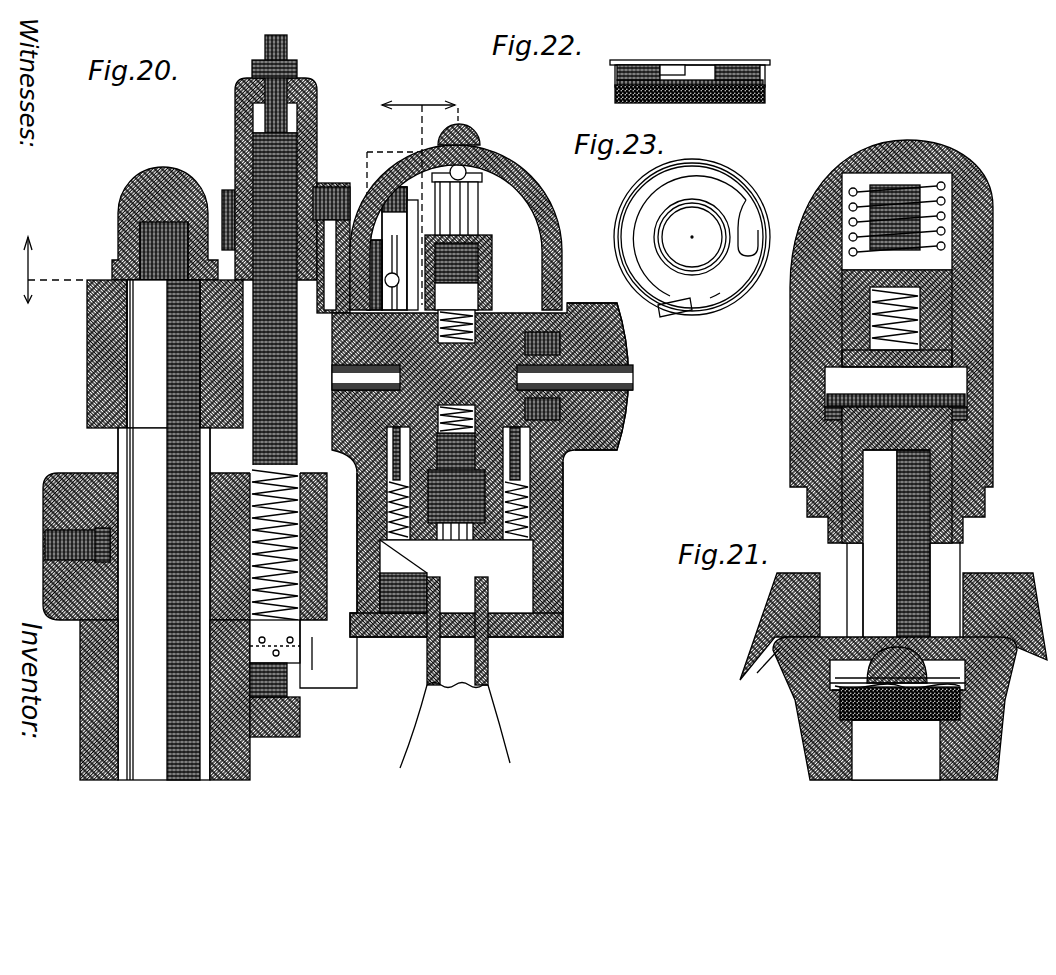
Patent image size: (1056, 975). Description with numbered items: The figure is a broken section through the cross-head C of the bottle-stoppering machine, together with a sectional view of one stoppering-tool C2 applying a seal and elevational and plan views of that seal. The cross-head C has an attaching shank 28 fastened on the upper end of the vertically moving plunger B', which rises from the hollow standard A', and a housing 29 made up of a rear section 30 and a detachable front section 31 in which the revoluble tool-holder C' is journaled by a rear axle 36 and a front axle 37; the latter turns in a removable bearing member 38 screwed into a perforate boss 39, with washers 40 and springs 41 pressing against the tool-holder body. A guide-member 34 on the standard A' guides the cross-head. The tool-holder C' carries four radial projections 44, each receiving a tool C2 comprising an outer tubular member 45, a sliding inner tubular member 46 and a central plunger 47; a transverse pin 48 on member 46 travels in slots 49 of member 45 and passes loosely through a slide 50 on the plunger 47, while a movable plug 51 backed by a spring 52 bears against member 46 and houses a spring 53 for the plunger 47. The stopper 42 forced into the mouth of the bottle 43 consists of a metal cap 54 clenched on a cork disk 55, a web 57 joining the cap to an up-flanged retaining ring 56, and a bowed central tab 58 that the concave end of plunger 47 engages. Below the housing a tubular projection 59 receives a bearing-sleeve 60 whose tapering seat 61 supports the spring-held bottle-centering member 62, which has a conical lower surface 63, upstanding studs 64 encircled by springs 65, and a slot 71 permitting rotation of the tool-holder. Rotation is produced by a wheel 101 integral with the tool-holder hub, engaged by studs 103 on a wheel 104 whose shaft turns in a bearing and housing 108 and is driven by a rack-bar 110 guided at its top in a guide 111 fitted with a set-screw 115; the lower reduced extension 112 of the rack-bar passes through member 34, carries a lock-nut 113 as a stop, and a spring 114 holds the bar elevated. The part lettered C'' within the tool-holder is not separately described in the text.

In FIG. 20, the attaching shank 28 is at (100, 379).
In FIG. 20, the housing 29 is at (452, 194).
In FIG. 20, the rear section 30 is at (416, 153).
In FIG. 20, the front section 31 is at (553, 183).
In FIG. 20, the guide-member 34 is at (303, 658).
In FIG. 20, the rear axle 36 is at (350, 375).
In FIG. 20, the front axle 37 is at (634, 377).
In FIG. 20, the removable bearing member 38 is at (612, 354).
In FIG. 20, the perforate boss 39 is at (600, 297).
In FIG. 20, the washers 40 is at (523, 311).
In FIG. 20, the springs 41 is at (567, 297).
In FIG. 22, the stopper 42 is at (711, 81).
In FIG. 23, the stopper 42 is at (678, 237).
In FIG. 21, the stopper 42 is at (963, 705).
In FIG. 20, the bottle 43 is at (455, 726).
In FIG. 21, the bottle 43 is at (902, 708).
In FIG. 20, the radial projections 44 is at (492, 252).
In FIG. 21, the radial projections 44 is at (790, 462).
In FIG. 21, the outer tubular member 45 is at (970, 503).
In FIG. 21, the inner tubular member 46 is at (973, 440).
In FIG. 21, the central plunger 47 is at (896, 550).
In FIG. 21, the transverse pin 48 is at (958, 388).
In FIG. 21, the slots 49 is at (830, 374).
In FIG. 21, the slide 50 is at (843, 361).
In FIG. 21, the movable plug 51 is at (953, 288).
In FIG. 21, the spring 52 is at (923, 231).
In FIG. 21, the spring 53 is at (923, 308).
In FIG. 22, the metal cap 54 is at (720, 86).
In FIG. 23, the metal cap 54 is at (705, 308).
In FIG. 21, the metal cap 54 is at (846, 697).
In FIG. 22, the cork disk 55 is at (741, 103).
In FIG. 21, the cork disk 55 is at (913, 708).
In FIG. 22, the retaining ring 56 is at (766, 67).
In FIG. 23, the retaining ring 56 is at (740, 178).
In FIG. 21, the retaining ring 56 is at (965, 688).
In FIG. 22, the web 57 is at (686, 64).
In FIG. 23, the central tab 58 is at (732, 218).
In FIG. 21, the central tab 58 is at (885, 684).
In FIG. 20, the tubular projection 59 is at (565, 597).
In FIG. 20, the bearing-sleeve 60 is at (562, 618).
In FIG. 20, the tapering seat 61 is at (408, 638).
In FIG. 20, the bottle-centering member 62 is at (533, 553).
In FIG. 21, the bottle-centering member 62 is at (993, 580).
In FIG. 20, the conical lower surface 63 is at (500, 580).
In FIG. 21, the conical lower surface 63 is at (757, 673).
In FIG. 20, the studs 64 is at (399, 465).
In FIG. 20, the springs 65 is at (393, 493).
In FIG. 20, the slot 71 is at (529, 530).
In FIG. 20, the wheel 101 is at (399, 282).
In FIG. 20, the studs 103 is at (380, 172).
In FIG. 20, the star-wheel 104 is at (390, 203).
In FIG. 20, the bearing and housing 108 is at (229, 190).
In FIG. 20, the rack-bar 110 is at (275, 301).
In FIG. 20, the guide 111 is at (238, 119).
In FIG. 20, the reduced extension 112 is at (258, 474).
In FIG. 20, the lock-nut 113 is at (252, 632).
In FIG. 20, the spring 114 is at (252, 539).
In FIG. 20, the set-screw 115 is at (289, 52).
In FIG. 20, the hollow standard A' is at (180, 535).
In FIG. 20, the plunger B' is at (164, 530).
In FIG. 20, the cross-head C is at (332, 432).
In FIG. 21, the cross-head C is at (922, 221).
In FIG. 20, the tool-holder C' is at (505, 273).
In FIG. 20, the casing part C'' is at (443, 378).
In FIG. 20, the seal-applying tools C2 is at (479, 219).
In FIG. 21, the seal-applying tools C2 is at (1019, 470).